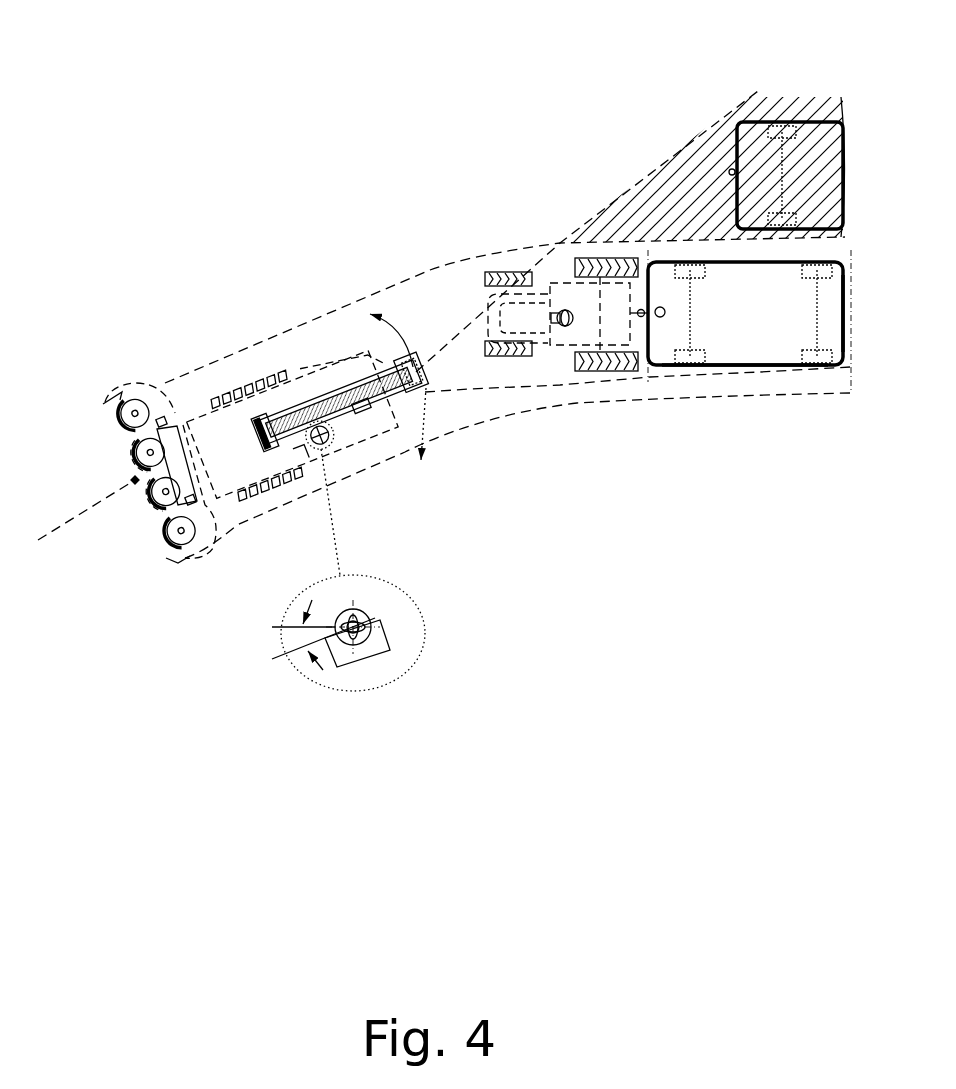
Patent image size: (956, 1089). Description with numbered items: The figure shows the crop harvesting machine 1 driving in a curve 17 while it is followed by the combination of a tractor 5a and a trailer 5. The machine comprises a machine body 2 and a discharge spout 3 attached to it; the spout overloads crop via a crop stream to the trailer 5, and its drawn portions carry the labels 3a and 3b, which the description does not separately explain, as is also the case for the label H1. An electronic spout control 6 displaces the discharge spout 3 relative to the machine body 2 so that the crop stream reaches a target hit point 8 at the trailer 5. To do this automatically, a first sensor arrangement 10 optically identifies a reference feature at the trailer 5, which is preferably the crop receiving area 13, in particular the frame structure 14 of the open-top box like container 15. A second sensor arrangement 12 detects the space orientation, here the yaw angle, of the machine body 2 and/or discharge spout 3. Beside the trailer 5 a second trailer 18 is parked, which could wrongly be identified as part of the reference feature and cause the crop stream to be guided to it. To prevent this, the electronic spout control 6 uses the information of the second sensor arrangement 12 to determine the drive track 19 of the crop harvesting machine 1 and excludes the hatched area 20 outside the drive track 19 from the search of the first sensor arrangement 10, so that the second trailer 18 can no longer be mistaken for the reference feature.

The crop harvesting machine 1 is at (135, 257).
The machine body 2 is at (223, 405).
The discharge spout 3 is at (333, 385).
The spout base section 3a is at (295, 400).
The spout outlet section 3b is at (416, 368).
The trailer 5 is at (708, 447).
The tractor 5a is at (568, 346).
The electronic spout control 6 is at (300, 450).
The target hit point 8 is at (659, 318).
The first sensor arrangement 10 is at (377, 420).
The second sensor arrangement 12 is at (328, 452).
The crop receiving area 13 is at (749, 320).
The frame structure 14 is at (737, 370).
The box like container 15 is at (842, 338).
The curve 17 is at (55, 522).
The second trailer 18 is at (745, 102).
The drive track 19 is at (228, 352).
The area outside of the drive track 20 is at (755, 175).
The driving direction / heading H1 is at (427, 380).